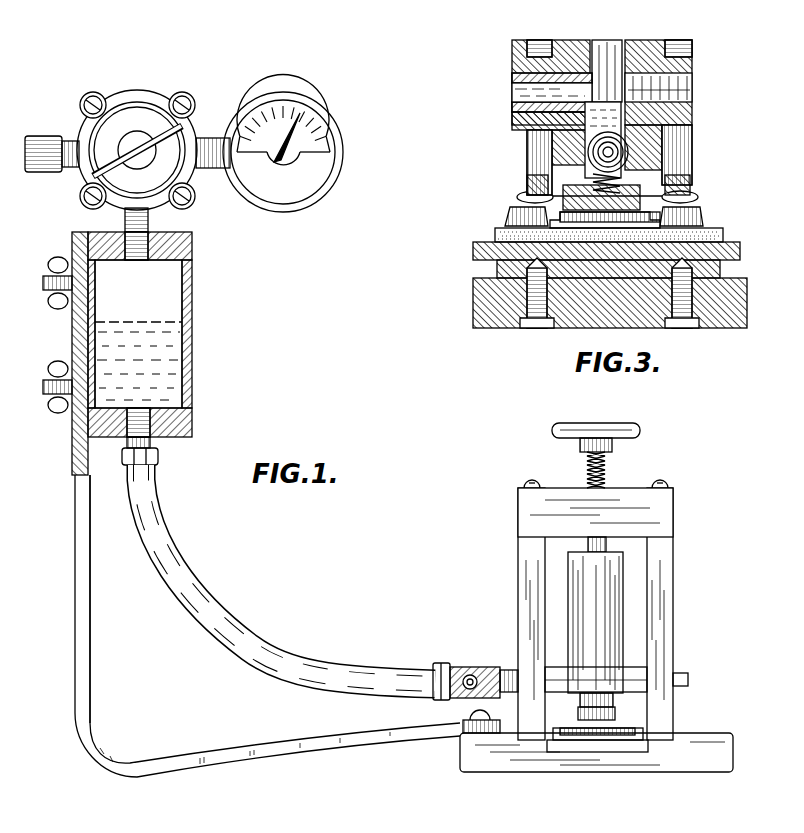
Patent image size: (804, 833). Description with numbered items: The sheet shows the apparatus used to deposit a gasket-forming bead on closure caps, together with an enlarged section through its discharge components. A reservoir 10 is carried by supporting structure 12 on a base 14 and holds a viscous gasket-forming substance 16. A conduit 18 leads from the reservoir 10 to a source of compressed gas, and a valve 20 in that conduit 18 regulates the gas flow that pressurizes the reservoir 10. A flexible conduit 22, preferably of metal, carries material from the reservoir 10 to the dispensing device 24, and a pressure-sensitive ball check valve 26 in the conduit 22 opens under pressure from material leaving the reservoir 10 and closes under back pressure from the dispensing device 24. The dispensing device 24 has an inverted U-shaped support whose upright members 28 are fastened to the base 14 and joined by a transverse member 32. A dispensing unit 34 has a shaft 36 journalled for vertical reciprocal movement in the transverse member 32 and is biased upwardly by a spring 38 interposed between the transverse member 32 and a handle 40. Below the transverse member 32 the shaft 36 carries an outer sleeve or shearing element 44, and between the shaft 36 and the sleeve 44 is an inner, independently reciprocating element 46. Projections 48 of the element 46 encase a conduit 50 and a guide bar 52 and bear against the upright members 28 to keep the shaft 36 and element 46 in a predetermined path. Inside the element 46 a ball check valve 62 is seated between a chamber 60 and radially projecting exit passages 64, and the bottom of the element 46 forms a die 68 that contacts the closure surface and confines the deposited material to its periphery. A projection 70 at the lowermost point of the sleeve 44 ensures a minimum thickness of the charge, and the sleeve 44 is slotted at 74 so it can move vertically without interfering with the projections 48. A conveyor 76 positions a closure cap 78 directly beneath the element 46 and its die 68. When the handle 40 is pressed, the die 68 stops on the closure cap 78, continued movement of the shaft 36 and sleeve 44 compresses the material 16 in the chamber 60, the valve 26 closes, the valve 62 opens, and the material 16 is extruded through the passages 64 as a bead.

In FIG. 1, the reservoir 10 is at (193, 290).
In FIG. 1, the supporting structure 12 is at (138, 777).
In FIG. 1, the base 14 is at (480, 760).
In FIG. 3, the base 14 is at (480, 305).
In FIG. 1, the viscous gasket-forming substance 16 is at (172, 365).
In FIG. 3, the viscous gasket-forming substance 16 is at (525, 198).
In FIG. 1, the conduit 18 is at (150, 222).
In FIG. 1, the valve 20 is at (157, 95).
In FIG. 1, the flexible conduit 22 is at (245, 635).
In FIG. 1, the dispensing device 24 is at (589, 609).
In FIG. 1, the pressure-sensitive ball check valve 26 is at (465, 675).
In FIG. 1, the upright members 28 is at (528, 575).
In FIG. 1, the transverse member 32 is at (663, 505).
In FIG. 1, the dispensing unit 34 is at (596, 448).
In FIG. 1, the shaft 36 is at (590, 540).
In FIG. 3, the shaft 36 is at (604, 45).
In FIG. 1, the spring 38 is at (603, 470).
In FIG. 1, the handle 40 is at (640, 430).
In FIG. 1, the outer sleeve or shearing element 44 is at (615, 598).
In FIG. 3, the outer sleeve or shearing element 44 is at (690, 52).
In FIG. 3, the inner reciprocating element 46 is at (650, 45).
In FIG. 1, the projections 48 is at (633, 668).
In FIG. 3, the projections 48 is at (540, 60).
In FIG. 3, the conduit 50 is at (520, 97).
In FIG. 1, the guide bar 52 is at (685, 680).
In FIG. 3, the guide bar 52 is at (693, 85).
In FIG. 3, the chamber 60 is at (515, 120).
In FIG. 3, the ball check valve 62 is at (612, 145).
In FIG. 3, the exit passages 64 is at (540, 185).
In FIG. 1, the die 68 is at (615, 713).
In FIG. 3, the die 68 is at (665, 216).
In FIG. 3, the projection 70 is at (635, 195).
In FIG. 3, the slots 74 is at (692, 140).
In FIG. 1, the conveyor 76 is at (640, 733).
In FIG. 3, the conveyor 76 is at (695, 250).
In FIG. 1, the closure cap 78 is at (592, 737).
In FIG. 3, the closure cap 78 is at (640, 207).